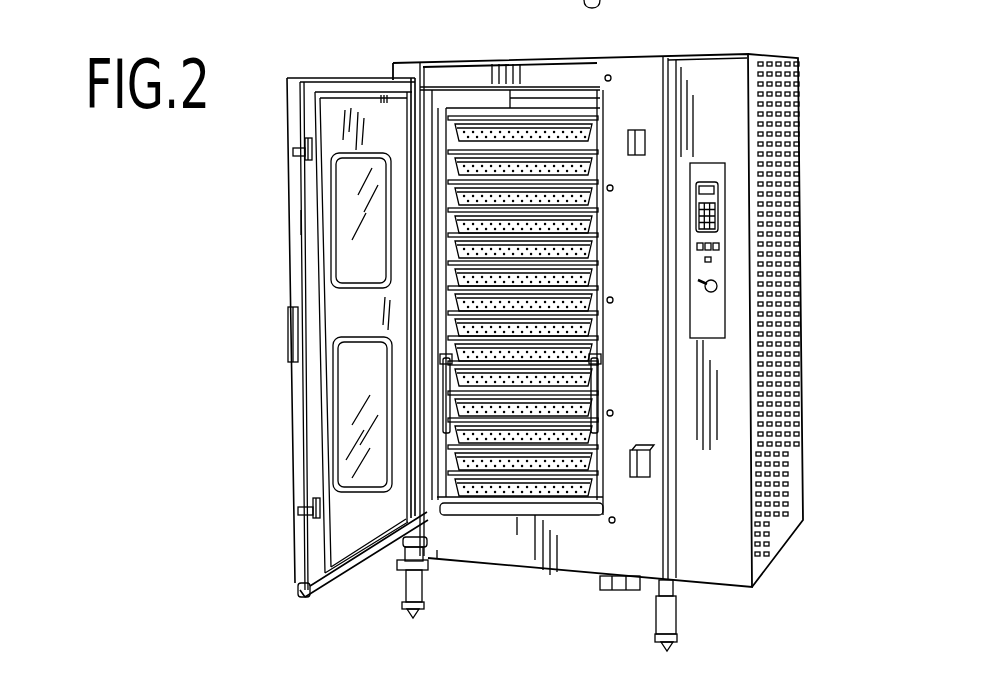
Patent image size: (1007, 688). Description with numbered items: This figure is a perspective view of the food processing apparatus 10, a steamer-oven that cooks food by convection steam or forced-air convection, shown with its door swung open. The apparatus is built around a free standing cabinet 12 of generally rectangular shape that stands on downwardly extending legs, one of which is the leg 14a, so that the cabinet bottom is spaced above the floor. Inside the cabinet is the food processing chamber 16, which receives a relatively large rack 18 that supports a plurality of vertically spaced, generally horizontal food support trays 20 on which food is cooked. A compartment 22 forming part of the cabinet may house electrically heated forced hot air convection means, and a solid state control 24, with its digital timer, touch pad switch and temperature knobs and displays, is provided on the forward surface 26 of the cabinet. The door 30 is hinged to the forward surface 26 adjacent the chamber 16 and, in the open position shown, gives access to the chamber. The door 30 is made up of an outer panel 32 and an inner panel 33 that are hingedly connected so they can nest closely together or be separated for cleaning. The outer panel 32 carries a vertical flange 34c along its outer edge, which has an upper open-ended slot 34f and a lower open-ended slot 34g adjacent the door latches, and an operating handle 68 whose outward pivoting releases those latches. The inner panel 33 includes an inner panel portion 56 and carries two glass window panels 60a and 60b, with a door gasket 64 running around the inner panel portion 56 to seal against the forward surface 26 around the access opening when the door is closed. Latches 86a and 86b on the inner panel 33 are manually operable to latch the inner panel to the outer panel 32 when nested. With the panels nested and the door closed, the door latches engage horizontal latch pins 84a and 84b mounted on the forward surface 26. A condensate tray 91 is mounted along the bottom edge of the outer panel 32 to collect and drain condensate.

The food processing apparatus 10 is at (368, 40).
The cabinet 12 is at (722, 44).
The leg 14a is at (425, 586).
The food processing chamber 16 is at (552, 88).
The rack 18 is at (501, 508).
The food support trays 20 is at (574, 178).
The compartment 22 is at (783, 483).
The solid state control 24 is at (717, 270).
The forward surface 26 is at (648, 73).
The door 30 is at (283, 270).
The outer panel 32 is at (284, 405).
The inner panel 33 is at (328, 112).
The vertical flange 34c is at (300, 220).
The open-ended slot 34f is at (293, 152).
The open-ended slot 34g is at (300, 512).
The inner panel portion 56 is at (346, 530).
The glass window panel 60a is at (352, 158).
The glass window panel 60b is at (356, 366).
The door gasket 64 is at (327, 453).
The operating handle 68 is at (288, 336).
The latch pin 84a is at (627, 148).
The latch pin 84b is at (630, 470).
The latch 86a is at (305, 142).
The latch 86b is at (313, 518).
The condensate tray 91 is at (307, 597).